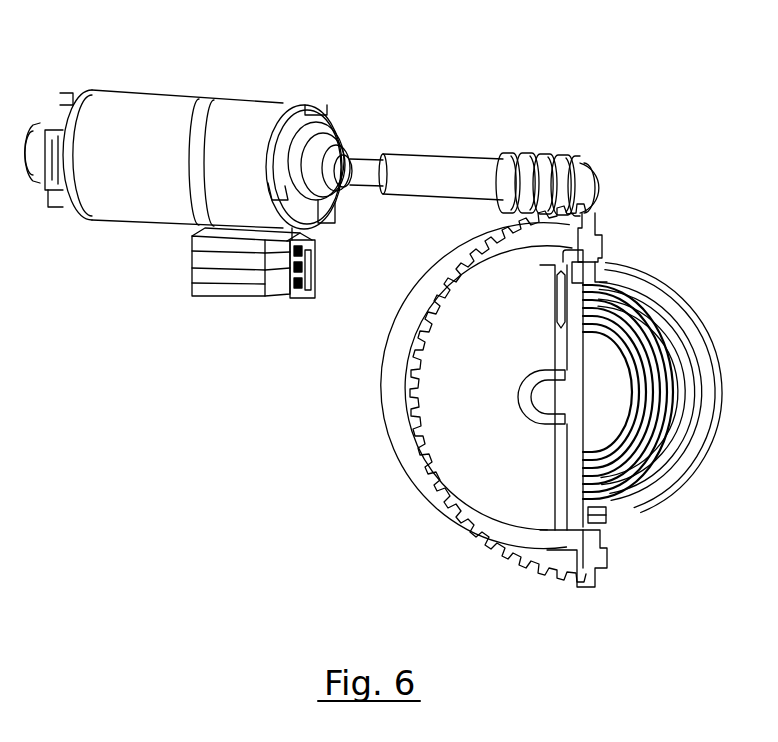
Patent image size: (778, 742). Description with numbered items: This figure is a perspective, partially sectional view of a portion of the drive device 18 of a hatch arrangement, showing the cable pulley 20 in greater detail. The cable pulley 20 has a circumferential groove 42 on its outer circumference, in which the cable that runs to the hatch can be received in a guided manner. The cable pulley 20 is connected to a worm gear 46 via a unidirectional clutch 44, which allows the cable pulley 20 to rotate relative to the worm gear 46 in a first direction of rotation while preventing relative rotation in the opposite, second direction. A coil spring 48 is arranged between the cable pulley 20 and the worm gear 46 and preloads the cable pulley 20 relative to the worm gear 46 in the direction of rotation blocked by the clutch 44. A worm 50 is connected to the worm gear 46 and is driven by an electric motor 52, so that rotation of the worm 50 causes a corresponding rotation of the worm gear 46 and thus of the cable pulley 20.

The drive device 18 is at (553, 121).
The cable pulley 20 is at (465, 445).
The circumferential groove 42 is at (557, 530).
The unidirectional clutch 44 is at (606, 512).
The worm gear 46 is at (596, 245).
The coil spring 48 is at (640, 328).
The worm 50 is at (410, 160).
The electric motor 52 is at (148, 115).